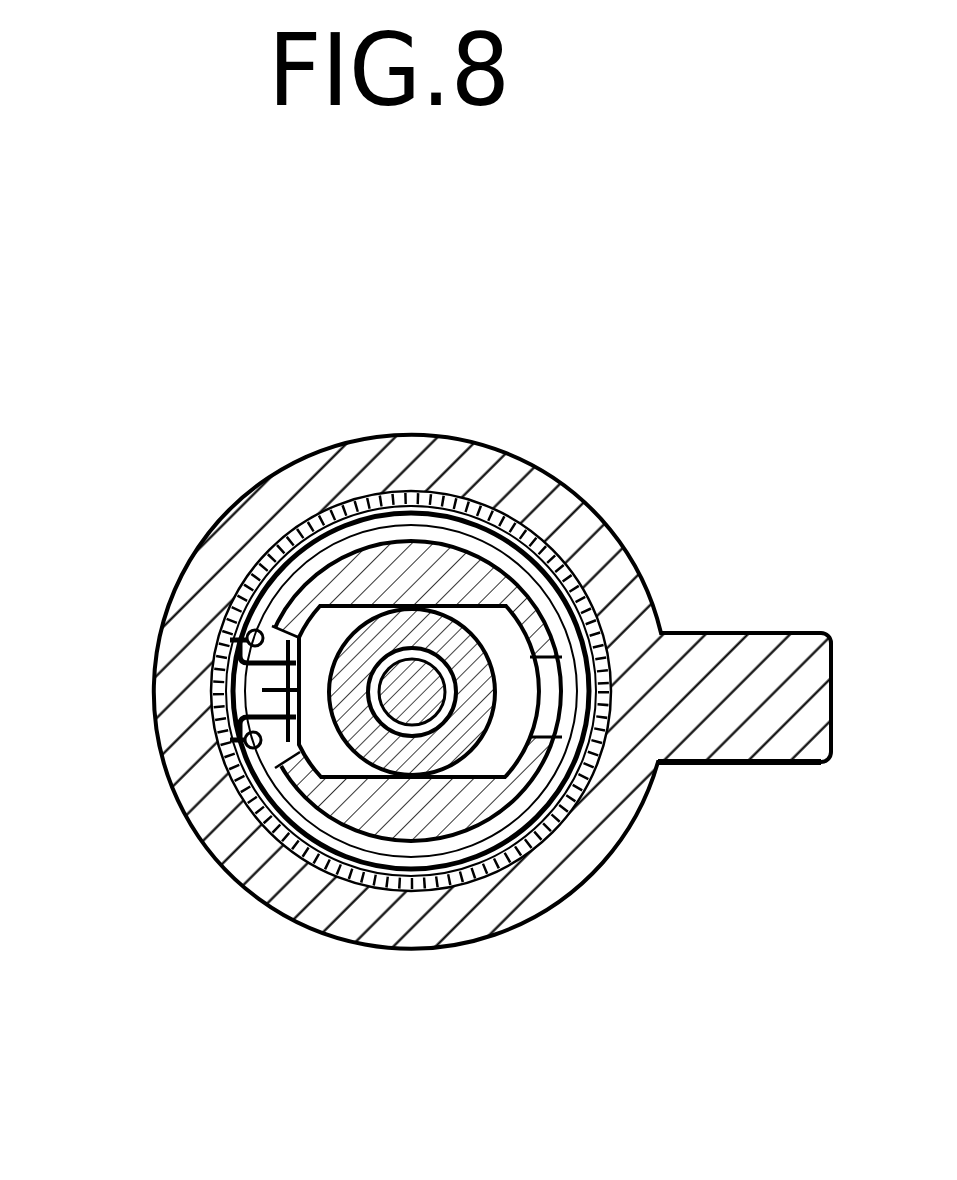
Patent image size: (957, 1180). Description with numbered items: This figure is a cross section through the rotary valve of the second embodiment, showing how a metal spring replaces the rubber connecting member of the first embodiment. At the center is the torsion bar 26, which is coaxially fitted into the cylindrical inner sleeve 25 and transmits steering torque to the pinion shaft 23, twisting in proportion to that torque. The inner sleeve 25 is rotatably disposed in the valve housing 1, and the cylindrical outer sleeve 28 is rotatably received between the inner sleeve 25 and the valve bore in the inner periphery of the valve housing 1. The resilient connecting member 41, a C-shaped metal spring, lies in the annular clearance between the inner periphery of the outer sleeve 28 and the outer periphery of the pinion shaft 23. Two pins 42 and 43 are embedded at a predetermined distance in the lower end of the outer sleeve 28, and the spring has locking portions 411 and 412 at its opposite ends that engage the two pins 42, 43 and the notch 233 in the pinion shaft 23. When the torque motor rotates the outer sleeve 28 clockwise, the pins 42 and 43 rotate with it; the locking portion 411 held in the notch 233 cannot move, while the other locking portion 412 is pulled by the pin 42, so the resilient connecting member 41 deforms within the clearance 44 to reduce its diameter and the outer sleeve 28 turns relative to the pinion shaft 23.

The valve housing 1 is at (627, 530).
The outer sleeve 28 is at (490, 507).
The resilient connecting member 41 is at (320, 518).
The locking portion 411 is at (250, 748).
The locking portion 412 is at (222, 680).
The pinion shaft 23 is at (418, 520).
The notch 233 is at (235, 690).
The pin 43 is at (250, 630).
The clearance 44 is at (300, 573).
The pin 42 is at (224, 752).
The inner sleeve 25 is at (348, 748).
The torsion bar 26 is at (412, 708).